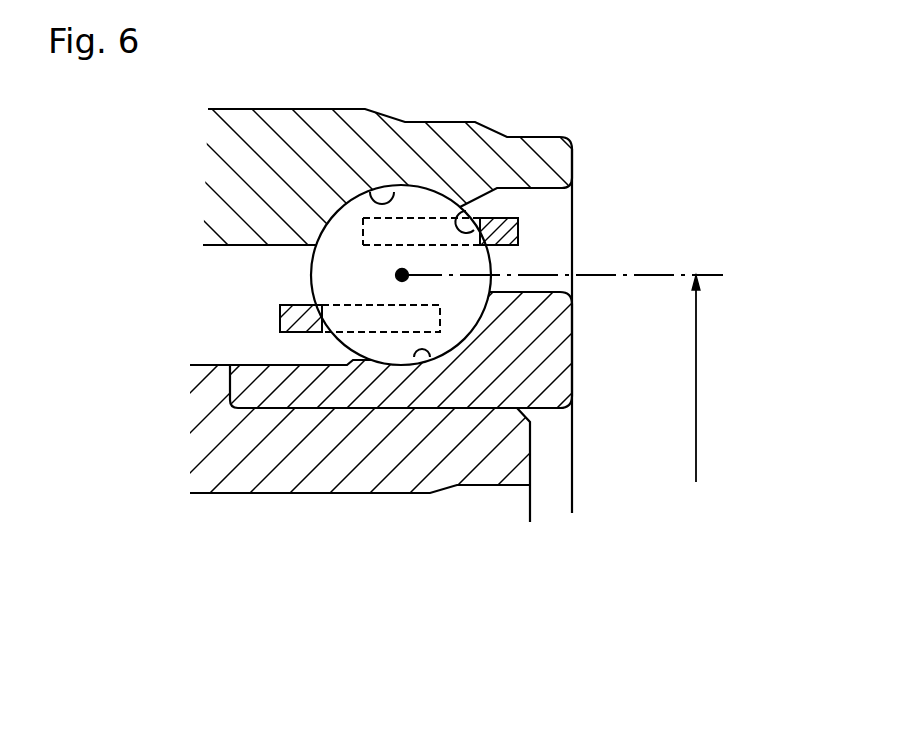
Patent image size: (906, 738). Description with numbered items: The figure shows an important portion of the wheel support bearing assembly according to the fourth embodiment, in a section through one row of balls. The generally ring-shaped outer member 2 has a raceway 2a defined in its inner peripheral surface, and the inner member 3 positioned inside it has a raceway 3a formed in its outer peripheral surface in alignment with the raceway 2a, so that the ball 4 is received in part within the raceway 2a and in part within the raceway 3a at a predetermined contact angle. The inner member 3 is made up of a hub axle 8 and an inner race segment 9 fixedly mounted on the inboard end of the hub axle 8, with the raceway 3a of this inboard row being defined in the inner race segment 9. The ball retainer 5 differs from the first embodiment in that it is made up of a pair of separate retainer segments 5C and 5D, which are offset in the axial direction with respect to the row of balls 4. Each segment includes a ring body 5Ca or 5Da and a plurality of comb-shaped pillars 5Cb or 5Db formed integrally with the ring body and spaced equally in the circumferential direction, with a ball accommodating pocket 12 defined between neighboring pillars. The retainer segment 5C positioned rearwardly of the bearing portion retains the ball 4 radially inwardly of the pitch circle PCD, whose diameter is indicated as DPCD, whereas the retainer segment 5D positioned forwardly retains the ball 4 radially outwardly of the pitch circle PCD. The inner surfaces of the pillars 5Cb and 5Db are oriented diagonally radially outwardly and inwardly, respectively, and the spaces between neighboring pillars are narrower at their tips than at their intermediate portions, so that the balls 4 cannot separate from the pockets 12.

The outer member 2 is at (222, 173).
The raceway 2a is at (403, 190).
The ball accommodating pocket 12 is at (459, 204).
The inner member 3 is at (384, 460).
The raceway 3a is at (425, 366).
The ball 4 is at (362, 348).
The ball retainer 5 is at (418, 200).
The retainer segment 5C is at (397, 202).
The ring body 5Ca is at (296, 318).
The pillar 5Cb is at (425, 323).
The retainer segment 5D is at (536, 147).
The ring body 5Da is at (505, 233).
The pillar 5Db is at (408, 232).
The hub axle 8 is at (268, 465).
The inner race segment 9 is at (382, 395).
The pitch circle PCD is at (402, 275).
The pitch circle diameter dimension DPCD is at (738, 378).